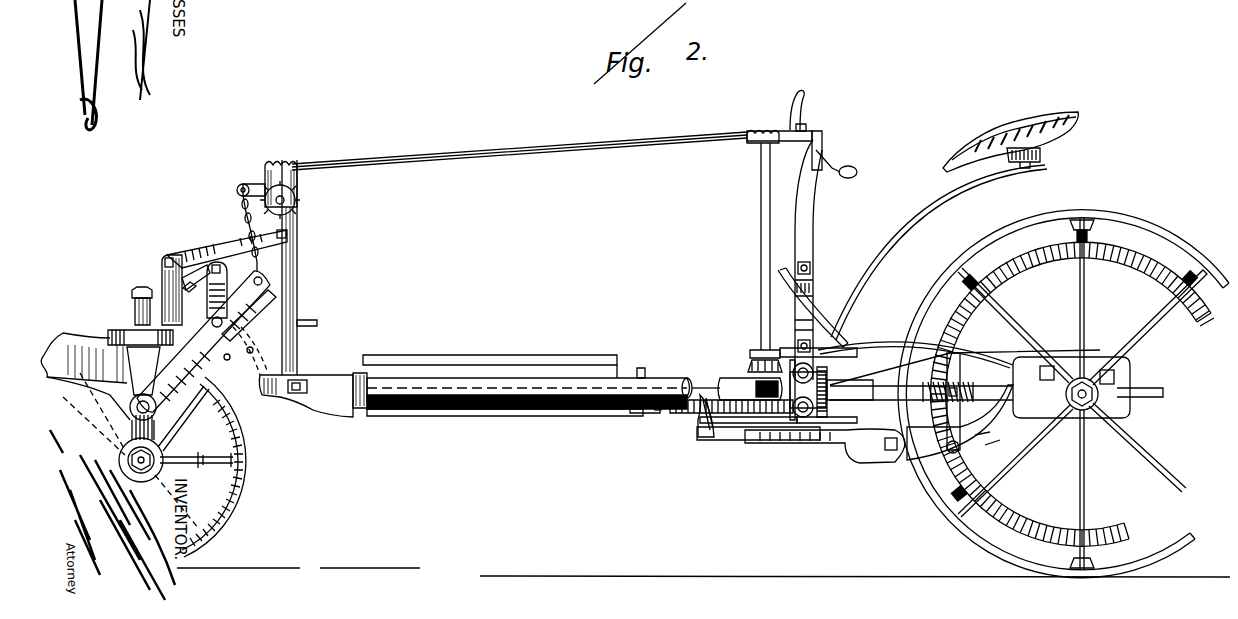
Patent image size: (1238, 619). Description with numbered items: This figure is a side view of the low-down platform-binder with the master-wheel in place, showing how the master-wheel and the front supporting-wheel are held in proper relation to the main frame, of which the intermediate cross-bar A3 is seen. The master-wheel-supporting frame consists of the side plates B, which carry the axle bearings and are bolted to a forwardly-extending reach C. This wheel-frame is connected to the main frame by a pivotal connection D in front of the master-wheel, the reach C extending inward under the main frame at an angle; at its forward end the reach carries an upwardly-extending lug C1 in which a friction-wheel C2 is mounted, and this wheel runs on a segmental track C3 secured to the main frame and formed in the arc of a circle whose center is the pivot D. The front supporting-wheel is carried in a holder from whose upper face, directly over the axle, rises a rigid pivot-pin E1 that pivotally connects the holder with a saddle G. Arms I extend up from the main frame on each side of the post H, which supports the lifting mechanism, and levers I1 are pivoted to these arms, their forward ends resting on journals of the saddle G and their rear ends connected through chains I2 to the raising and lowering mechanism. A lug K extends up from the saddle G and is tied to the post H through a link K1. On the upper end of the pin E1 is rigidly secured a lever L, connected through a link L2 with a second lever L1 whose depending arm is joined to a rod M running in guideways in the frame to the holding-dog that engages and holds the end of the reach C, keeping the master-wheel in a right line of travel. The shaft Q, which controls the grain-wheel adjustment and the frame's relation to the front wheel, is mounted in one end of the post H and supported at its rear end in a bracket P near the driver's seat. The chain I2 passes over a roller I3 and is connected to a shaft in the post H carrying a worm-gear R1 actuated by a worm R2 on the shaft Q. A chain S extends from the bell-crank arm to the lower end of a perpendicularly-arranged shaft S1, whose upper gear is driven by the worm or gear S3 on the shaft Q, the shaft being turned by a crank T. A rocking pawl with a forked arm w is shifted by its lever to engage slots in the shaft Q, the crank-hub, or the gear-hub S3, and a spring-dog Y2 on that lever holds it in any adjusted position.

The side plates B is at (975, 442).
The pivotal connection D is at (840, 448).
The bracket P is at (815, 213).
The crank T is at (818, 160).
The spring-dog Y2 is at (800, 105).
The arm of rocking pawl w is at (806, 127).
The worm or gear S3 is at (760, 122).
The perpendicularly-arranged shaft S1 is at (761, 205).
The chain S is at (756, 352).
The shaft Q is at (519, 161).
The post H is at (298, 290).
The worm R2 is at (281, 168).
The worm-gear R1 is at (299, 207).
The roller I3 is at (242, 186).
The chains I2 is at (262, 264).
The lug K is at (182, 305).
The lever L is at (130, 305).
The lever L1 is at (197, 285).
The link L2 is at (190, 282).
The link K1 is at (213, 240).
The pivot-pin E1 is at (157, 287).
The saddle G is at (112, 333).
The arms I is at (236, 362).
The levers I1 is at (234, 316).
The intermediate cross-bar A3 is at (640, 388).
The rod M is at (337, 375).
The friction-wheel C2 is at (700, 382).
The segmental track C3 is at (750, 415).
The reach C is at (780, 445).
The lug C1 is at (697, 425).